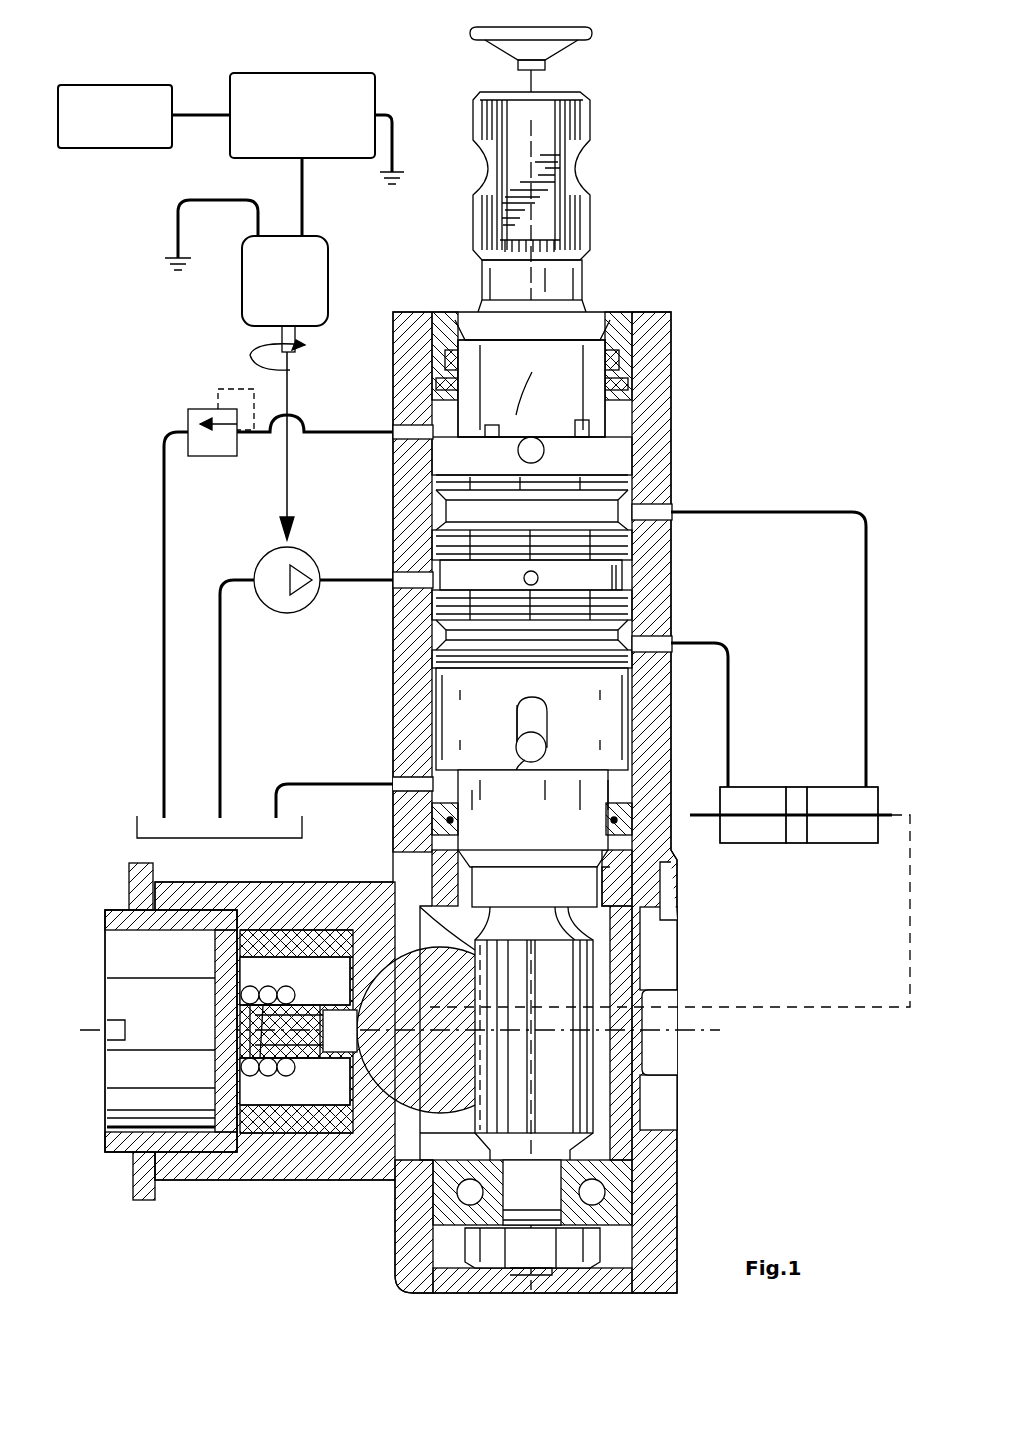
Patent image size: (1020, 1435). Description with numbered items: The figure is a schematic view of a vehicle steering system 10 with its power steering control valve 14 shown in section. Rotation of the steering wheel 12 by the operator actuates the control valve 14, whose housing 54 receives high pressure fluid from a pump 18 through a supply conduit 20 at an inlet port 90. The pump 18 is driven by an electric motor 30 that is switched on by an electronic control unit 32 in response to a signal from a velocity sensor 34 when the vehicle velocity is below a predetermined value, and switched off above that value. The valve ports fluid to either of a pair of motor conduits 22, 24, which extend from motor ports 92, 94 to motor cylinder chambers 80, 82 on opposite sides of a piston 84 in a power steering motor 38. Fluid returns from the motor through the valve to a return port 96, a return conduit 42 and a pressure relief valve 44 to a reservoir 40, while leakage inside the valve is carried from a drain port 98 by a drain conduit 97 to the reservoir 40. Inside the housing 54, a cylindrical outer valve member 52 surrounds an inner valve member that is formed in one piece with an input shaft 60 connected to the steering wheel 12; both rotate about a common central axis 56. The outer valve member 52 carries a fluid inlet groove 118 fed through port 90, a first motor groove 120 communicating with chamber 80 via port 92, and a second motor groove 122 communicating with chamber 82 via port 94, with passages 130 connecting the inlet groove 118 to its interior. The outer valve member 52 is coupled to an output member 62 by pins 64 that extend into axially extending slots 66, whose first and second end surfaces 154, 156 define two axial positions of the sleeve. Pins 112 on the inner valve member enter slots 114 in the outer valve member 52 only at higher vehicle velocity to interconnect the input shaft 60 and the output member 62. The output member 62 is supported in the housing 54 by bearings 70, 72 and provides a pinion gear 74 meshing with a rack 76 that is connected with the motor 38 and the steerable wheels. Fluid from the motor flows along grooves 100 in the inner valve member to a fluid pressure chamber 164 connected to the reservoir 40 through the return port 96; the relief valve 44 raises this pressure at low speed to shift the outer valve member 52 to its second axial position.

The vehicle steering system 10 is at (700, 125).
The steering wheel 12 is at (570, 32).
The power steering control valve 14 is at (672, 292).
The pump 18 is at (275, 606).
The supply conduit 20 is at (340, 580).
The motor conduit 22 is at (862, 625).
The motor conduit 24 is at (730, 700).
The electric motor 30 is at (322, 252).
The electronic control unit 32 is at (326, 73).
The velocity sensor 34 is at (128, 85).
The power steering motor 38 is at (847, 843).
The reservoir 40 is at (125, 818).
The return conduit 42 is at (164, 578).
The pressure relief valve 44 is at (192, 409).
The outer valve member 52 is at (435, 718).
The housing 54 is at (650, 380).
The central axis 56 is at (560, 155).
The input shaft 60 is at (590, 220).
The output member 62 is at (470, 846).
The pin 64 is at (538, 745).
The slot 66 is at (516, 722).
The bearing 70 is at (612, 895).
The bearing 72 is at (640, 1170).
The pinion gear 74 is at (590, 1085).
The rack 76 is at (380, 1120).
The motor cylinder chamber 80 is at (847, 795).
The motor cylinder chamber 82 is at (757, 795).
The piston 84 is at (796, 843).
The inlet port 90 is at (440, 560).
The motor port 92 is at (652, 500).
The motor port 94 is at (644, 648).
The return port 96 is at (430, 432).
The drain conduit 97 is at (320, 784).
The drain port 98 is at (445, 810).
The groove 100 is at (490, 415).
The pin 112 is at (536, 445).
The slot 114 is at (518, 454).
The fluid inlet groove 118 is at (620, 578).
The first motor groove 120 is at (440, 508).
The second motor groove 122 is at (440, 650).
The passage 130 is at (540, 575).
The first end surface 154 is at (528, 762).
The second end surface 156 is at (540, 706).
The fluid pressure chamber 164 is at (612, 428).